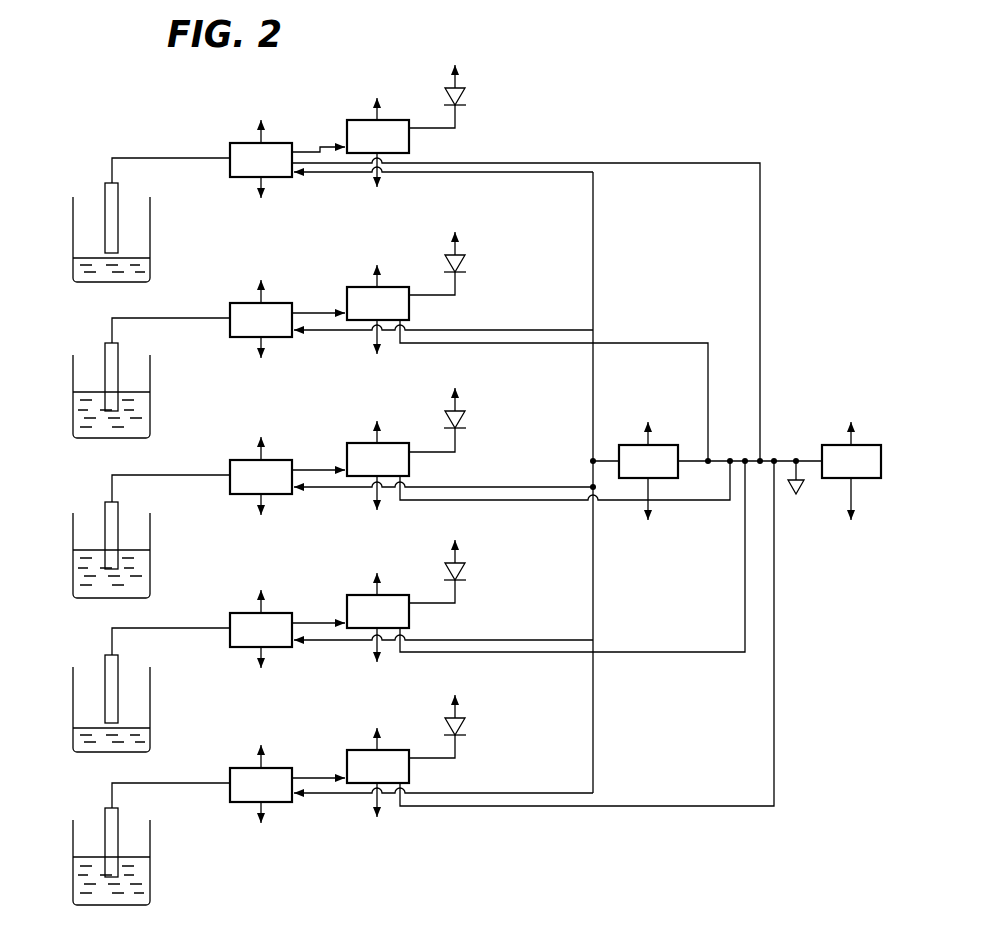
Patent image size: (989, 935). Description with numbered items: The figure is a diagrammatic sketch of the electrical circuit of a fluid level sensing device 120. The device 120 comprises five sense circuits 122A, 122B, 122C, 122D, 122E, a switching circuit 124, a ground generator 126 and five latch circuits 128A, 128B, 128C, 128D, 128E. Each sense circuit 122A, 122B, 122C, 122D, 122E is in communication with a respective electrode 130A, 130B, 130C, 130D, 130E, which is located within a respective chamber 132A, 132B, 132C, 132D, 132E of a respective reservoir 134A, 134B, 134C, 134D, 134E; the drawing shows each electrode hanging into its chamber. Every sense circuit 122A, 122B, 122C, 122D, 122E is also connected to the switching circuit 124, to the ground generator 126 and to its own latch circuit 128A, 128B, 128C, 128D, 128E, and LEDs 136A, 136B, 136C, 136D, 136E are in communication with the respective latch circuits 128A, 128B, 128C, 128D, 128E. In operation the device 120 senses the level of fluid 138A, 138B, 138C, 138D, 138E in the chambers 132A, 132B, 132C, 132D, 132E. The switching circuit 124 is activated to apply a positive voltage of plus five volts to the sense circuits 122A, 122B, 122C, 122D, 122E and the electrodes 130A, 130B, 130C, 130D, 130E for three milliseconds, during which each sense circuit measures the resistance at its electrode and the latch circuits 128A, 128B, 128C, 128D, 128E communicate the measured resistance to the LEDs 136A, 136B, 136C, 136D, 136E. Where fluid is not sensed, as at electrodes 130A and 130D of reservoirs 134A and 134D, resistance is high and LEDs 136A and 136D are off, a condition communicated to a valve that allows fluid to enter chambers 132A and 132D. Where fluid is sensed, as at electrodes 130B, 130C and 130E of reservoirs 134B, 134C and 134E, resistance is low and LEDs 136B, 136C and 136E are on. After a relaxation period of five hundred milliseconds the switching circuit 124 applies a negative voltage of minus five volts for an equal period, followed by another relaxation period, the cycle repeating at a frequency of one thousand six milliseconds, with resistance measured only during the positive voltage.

The device 120 is at (763, 842).
The sense circuit 122A is at (288, 171).
The sense circuit 122B is at (288, 331).
The sense circuit 122C is at (288, 488).
The sense circuit 122D is at (288, 641).
The sense circuit 122E is at (288, 796).
The switching circuit 124 is at (667, 472).
The ground generator 126 is at (871, 472).
The latch circuit 128A is at (404, 147).
The latch circuit 128B is at (404, 314).
The latch circuit 128C is at (404, 470).
The latch circuit 128D is at (404, 622).
The latch circuit 128E is at (404, 777).
The electrode 130A is at (107, 183).
The electrode 130B is at (107, 343).
The electrode 130C is at (107, 502).
The electrode 130D is at (107, 655).
The electrode 130E is at (104, 809).
The chamber 132A is at (133, 232).
The chamber 132B is at (133, 384).
The chamber 132C is at (133, 540).
The chamber 132D is at (133, 697).
The chamber 132E is at (133, 827).
The reservoir 134A is at (72, 268).
The reservoir 134B is at (72, 425).
The reservoir 134C is at (72, 585).
The reservoir 134D is at (72, 738).
The reservoir 134E is at (152, 848).
The LED 136A is at (474, 130).
The LED 136B is at (478, 254).
The LED 136C is at (478, 410).
The LED 136D is at (478, 562).
The LED 136E is at (478, 717).
The fluid 138A is at (128, 263).
The fluid 138B is at (128, 419).
The fluid 138C is at (128, 579).
The fluid 138D is at (128, 733).
The fluid 138E is at (125, 882).